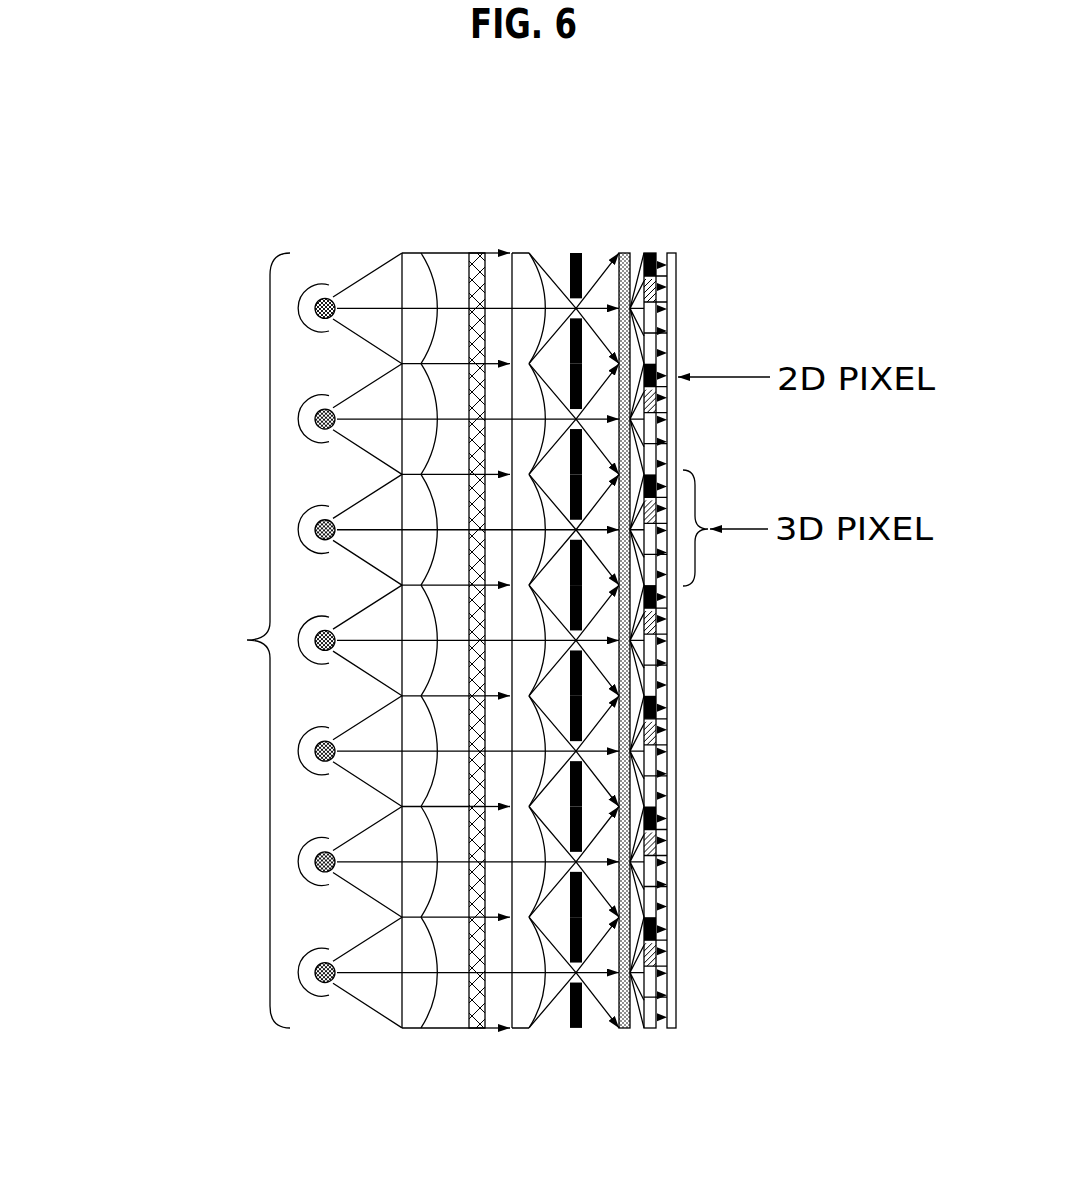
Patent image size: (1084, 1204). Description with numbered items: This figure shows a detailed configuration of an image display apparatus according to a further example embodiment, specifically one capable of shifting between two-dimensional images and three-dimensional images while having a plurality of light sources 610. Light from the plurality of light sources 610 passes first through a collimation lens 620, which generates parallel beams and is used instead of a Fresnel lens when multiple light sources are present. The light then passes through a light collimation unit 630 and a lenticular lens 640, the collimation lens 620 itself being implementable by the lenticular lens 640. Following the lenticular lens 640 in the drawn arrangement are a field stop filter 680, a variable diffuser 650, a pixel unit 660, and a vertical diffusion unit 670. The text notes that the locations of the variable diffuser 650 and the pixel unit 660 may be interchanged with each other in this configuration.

The light sources 610 is at (247, 640).
The collimation lens 620 is at (417, 292).
The light collimation unit 630 is at (447, 253).
The lenticular lens 640 is at (527, 275).
The variable diffuser 650 is at (624, 253).
The pixel unit 660 is at (650, 253).
The vertical diffusion unit 670 is at (677, 265).
The field stop filter 680 is at (573, 253).